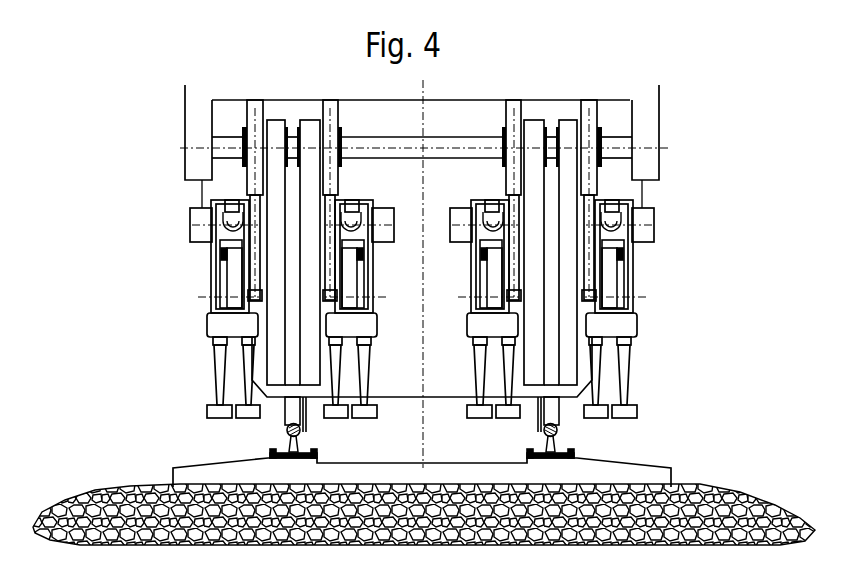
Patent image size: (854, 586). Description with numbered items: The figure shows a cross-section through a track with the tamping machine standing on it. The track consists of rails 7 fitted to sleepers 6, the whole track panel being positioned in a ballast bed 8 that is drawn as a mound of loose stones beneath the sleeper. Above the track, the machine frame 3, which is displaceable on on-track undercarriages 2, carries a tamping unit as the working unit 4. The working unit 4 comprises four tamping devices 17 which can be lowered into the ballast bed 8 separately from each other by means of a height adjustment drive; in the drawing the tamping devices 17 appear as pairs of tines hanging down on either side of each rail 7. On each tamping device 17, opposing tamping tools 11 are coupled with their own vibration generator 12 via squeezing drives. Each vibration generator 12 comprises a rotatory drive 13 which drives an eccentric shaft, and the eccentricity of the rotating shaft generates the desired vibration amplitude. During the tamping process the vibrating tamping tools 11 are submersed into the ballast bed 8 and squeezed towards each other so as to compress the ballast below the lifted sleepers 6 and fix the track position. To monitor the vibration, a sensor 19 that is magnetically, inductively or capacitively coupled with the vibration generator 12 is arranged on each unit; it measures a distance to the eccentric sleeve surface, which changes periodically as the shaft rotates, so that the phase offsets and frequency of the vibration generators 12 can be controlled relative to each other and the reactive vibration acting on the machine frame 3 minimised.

The on-track undercarriage 2 is at (287, 424).
The machine frame 3 is at (197, 112).
The working unit 4 is at (703, 85).
The sleeper 6 is at (657, 472).
The rail 7 is at (306, 434).
The ballast bed 8 is at (708, 503).
The tamping tool 11 is at (222, 322).
The vibration generator 12 is at (196, 203).
The rotatory drive 13 is at (190, 222).
The tamping device 17 is at (207, 372).
The sensor 19 is at (220, 252).